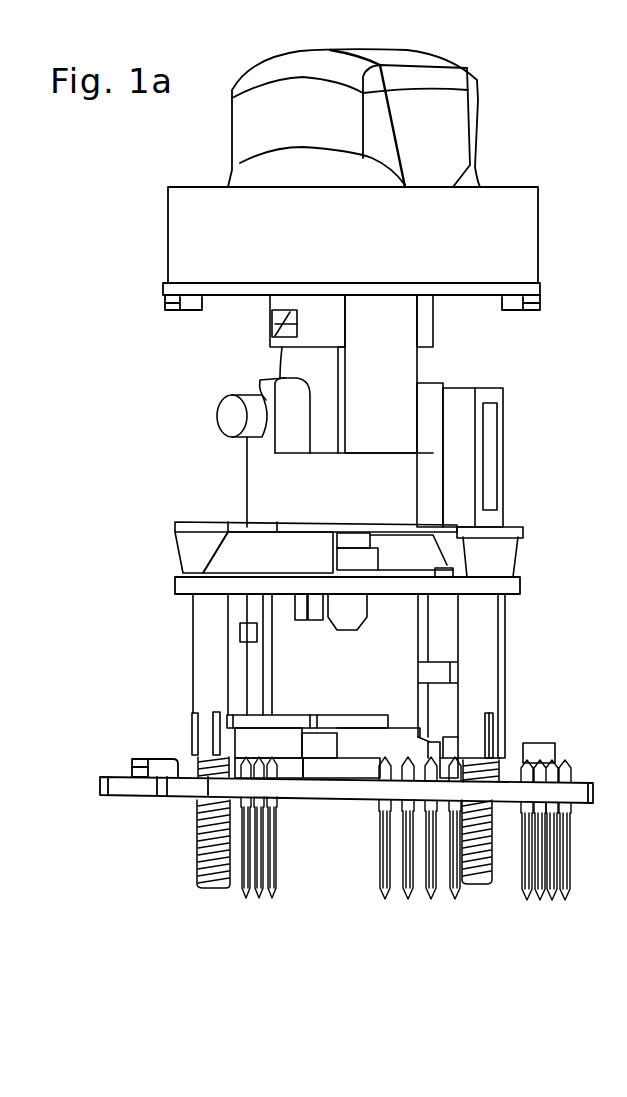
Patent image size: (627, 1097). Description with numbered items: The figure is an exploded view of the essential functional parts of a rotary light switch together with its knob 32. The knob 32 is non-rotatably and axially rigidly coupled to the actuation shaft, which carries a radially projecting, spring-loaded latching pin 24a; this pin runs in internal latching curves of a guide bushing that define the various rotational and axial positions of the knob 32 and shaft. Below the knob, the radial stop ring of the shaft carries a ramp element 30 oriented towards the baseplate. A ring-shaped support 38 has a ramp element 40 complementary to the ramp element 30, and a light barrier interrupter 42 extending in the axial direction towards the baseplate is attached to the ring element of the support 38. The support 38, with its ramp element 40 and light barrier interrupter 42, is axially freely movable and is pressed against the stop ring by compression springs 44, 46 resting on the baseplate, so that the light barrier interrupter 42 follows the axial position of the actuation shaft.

The knob 32 is at (448, 123).
The latching pin 24a is at (230, 415).
The ramp element 30 is at (190, 543).
The ring-shaped support 38 is at (520, 583).
The ramp element 40 is at (232, 563).
The light barrier interrupter 42 is at (435, 645).
The compression spring 44 is at (197, 853).
The compression spring 46 is at (490, 853).